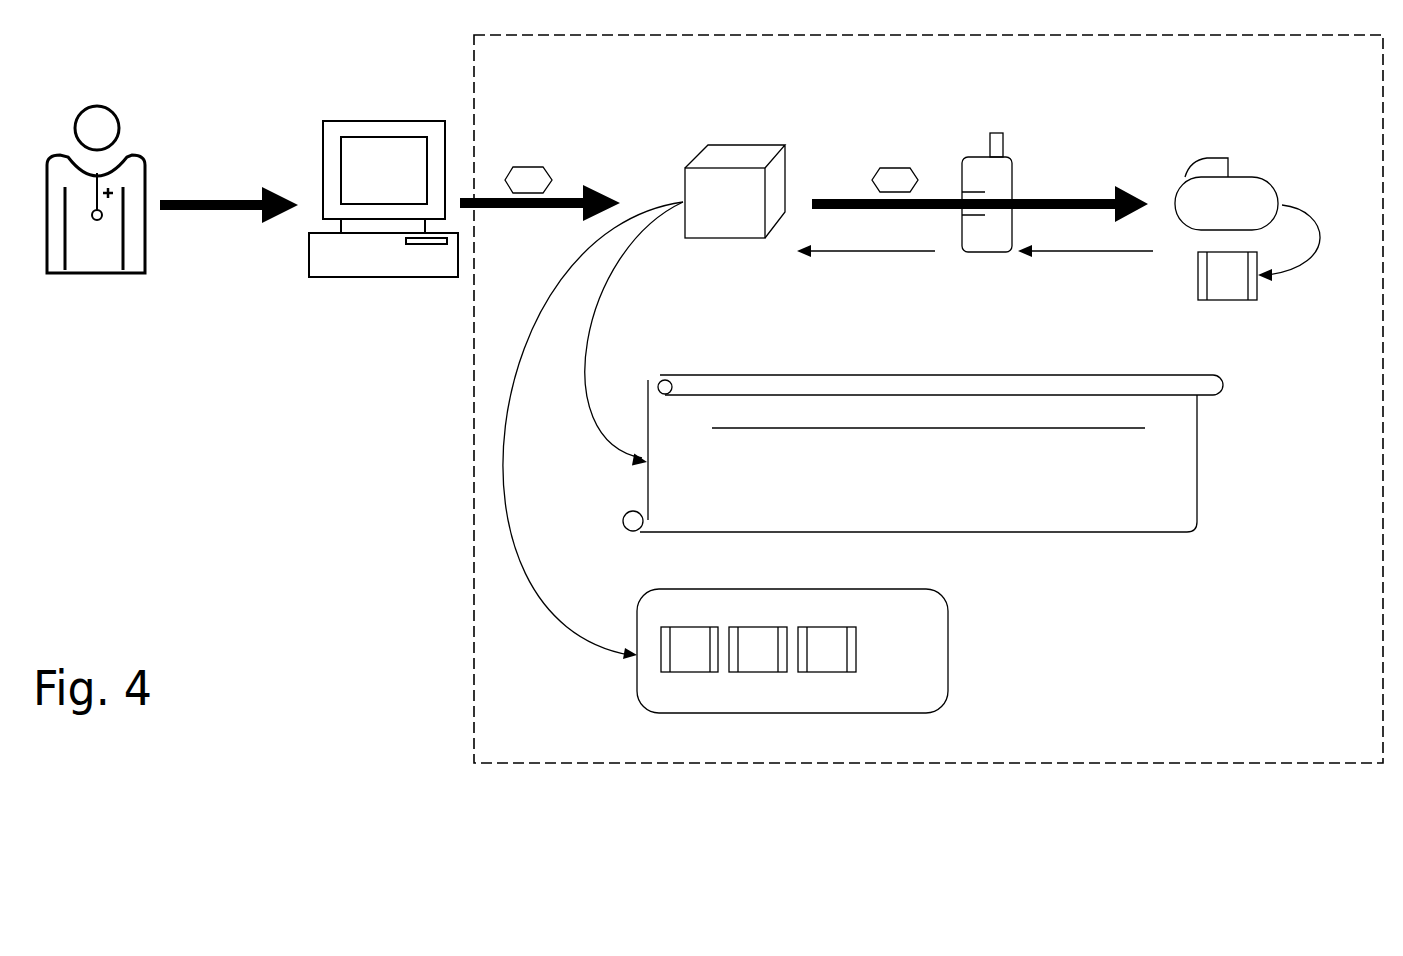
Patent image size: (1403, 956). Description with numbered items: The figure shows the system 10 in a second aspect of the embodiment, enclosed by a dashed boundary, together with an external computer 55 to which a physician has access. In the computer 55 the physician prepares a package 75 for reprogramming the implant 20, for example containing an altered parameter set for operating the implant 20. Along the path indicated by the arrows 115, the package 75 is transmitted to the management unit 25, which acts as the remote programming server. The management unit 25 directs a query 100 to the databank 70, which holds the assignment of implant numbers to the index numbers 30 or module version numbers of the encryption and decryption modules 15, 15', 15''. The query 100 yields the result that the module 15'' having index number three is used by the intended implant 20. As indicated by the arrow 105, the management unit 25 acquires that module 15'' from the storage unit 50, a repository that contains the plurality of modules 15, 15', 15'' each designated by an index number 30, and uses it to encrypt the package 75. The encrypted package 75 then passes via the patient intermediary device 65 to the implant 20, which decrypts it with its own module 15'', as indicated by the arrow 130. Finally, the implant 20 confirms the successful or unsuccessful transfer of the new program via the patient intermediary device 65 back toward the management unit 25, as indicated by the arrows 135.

The system 10 is at (474, 595).
The encryption and decryption module 15 is at (665, 692).
The encryption and decryption module 15' is at (735, 692).
The encryption and decryption module 15'' is at (1003, 505).
The implant 20 is at (1240, 176).
The management unit 25 is at (685, 168).
The index number 30 is at (826, 640).
The storage unit 50 is at (948, 650).
The computer 55 is at (415, 121).
The patient intermediary device 65 is at (1013, 160).
The databank 70 is at (1197, 460).
The package 75 is at (528, 167).
The query 100 is at (589, 305).
The arrow 105 is at (520, 543).
The arrow 115 is at (549, 208).
The arrow 130 is at (1292, 270).
The arrows 135 is at (935, 251).